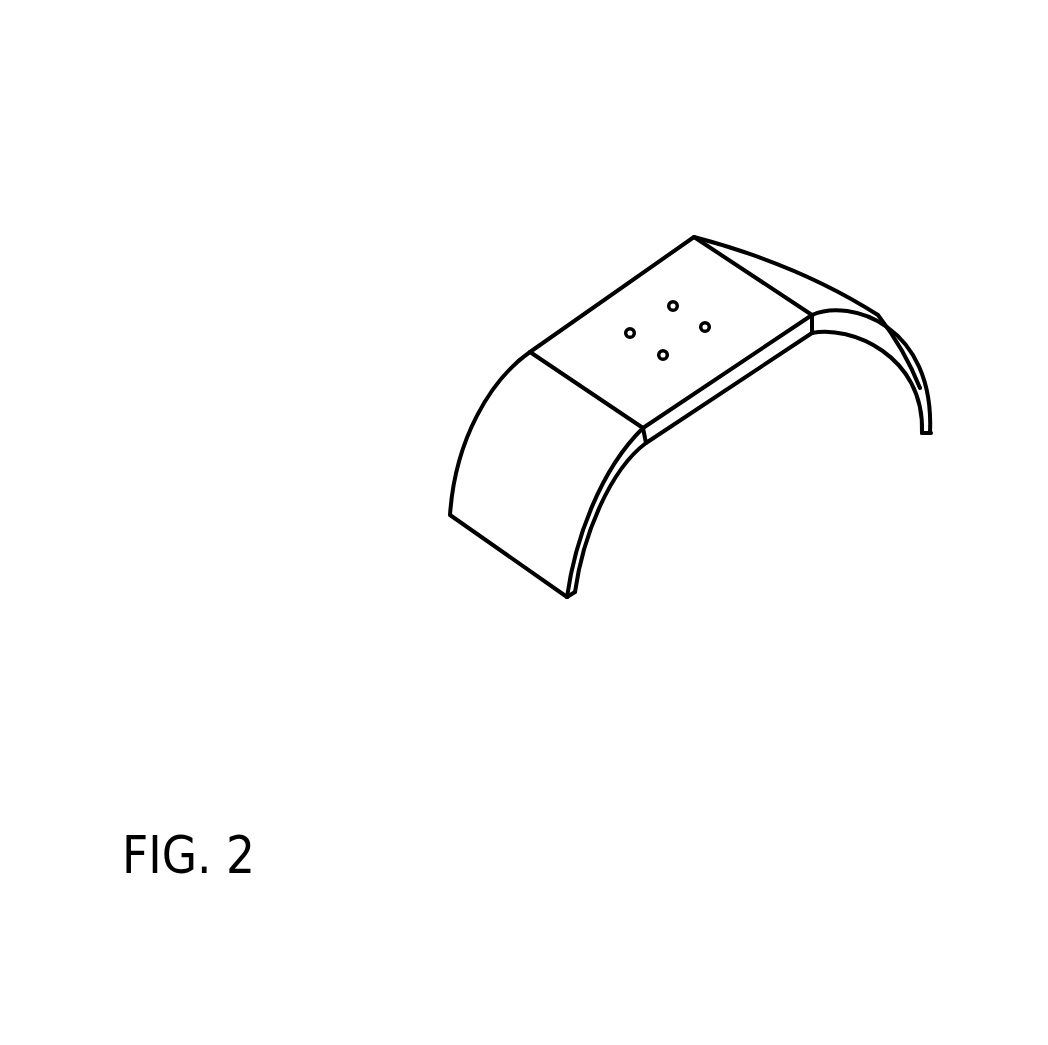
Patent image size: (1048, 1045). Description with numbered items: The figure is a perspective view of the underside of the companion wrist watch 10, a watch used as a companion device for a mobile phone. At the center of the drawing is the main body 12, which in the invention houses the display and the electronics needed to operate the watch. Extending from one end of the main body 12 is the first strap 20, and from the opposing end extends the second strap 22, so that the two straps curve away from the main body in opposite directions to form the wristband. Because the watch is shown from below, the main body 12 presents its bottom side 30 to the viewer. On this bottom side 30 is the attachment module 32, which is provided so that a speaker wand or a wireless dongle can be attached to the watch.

The wrist watch 10 is at (372, 320).
The main body 12 is at (672, 412).
The first strap 20 is at (490, 527).
The second strap 22 is at (847, 293).
The bottom side 30 is at (719, 278).
The attachment module 32 is at (573, 340).